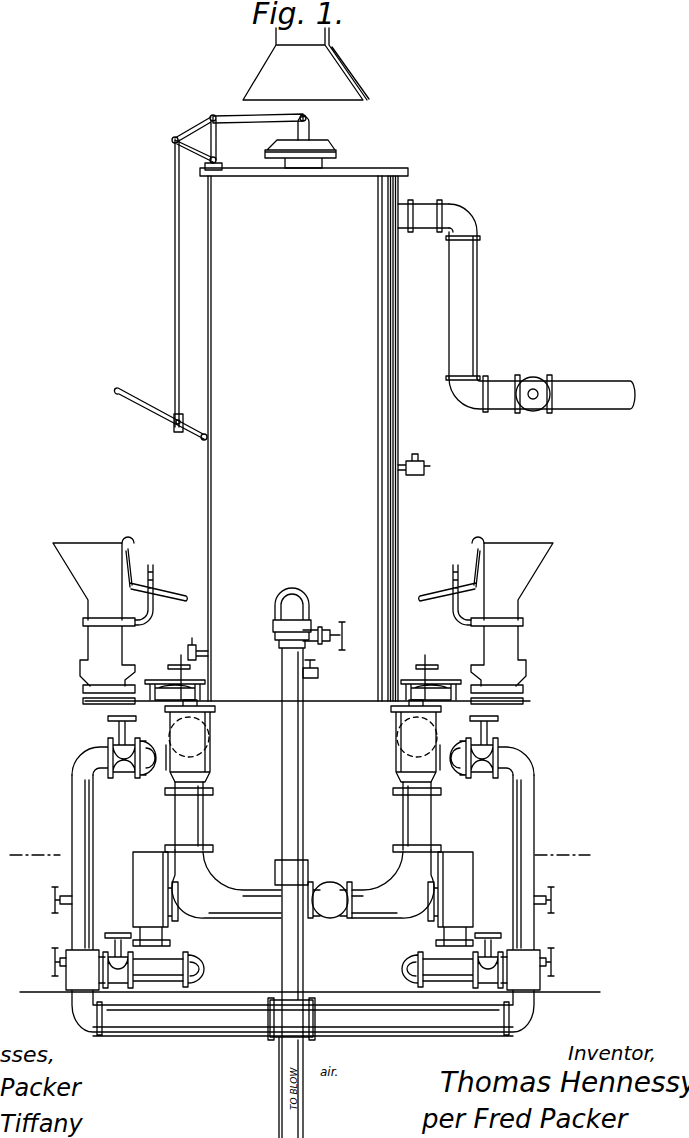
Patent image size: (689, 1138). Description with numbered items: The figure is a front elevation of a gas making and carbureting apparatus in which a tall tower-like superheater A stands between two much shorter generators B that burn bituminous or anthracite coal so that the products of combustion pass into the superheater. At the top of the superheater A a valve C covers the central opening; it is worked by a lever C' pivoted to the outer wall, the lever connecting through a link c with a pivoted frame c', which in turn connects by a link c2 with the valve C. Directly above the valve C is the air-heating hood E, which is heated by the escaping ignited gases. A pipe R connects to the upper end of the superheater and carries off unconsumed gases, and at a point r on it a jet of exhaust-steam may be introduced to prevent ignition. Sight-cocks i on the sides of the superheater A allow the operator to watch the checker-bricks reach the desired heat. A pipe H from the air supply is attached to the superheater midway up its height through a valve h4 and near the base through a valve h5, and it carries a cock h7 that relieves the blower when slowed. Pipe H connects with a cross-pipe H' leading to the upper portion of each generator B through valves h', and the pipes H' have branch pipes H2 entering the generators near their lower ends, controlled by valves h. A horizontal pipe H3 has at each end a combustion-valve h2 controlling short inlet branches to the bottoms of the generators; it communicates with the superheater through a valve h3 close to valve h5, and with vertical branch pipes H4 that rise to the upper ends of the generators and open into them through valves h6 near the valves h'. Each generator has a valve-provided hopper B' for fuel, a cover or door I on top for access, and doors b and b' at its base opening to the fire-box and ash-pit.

The air-heating hood E is at (306, 64).
The superheater A is at (307, 434).
The valve C is at (310, 143).
The link c2 is at (266, 120).
The pivoted frame c' is at (197, 140).
The link c is at (167, 283).
The lever C' is at (160, 416).
The point r is at (424, 212).
The pipe R is at (470, 323).
The sight-cock i is at (313, 557).
The valve-provided hopper B' is at (303, 620).
The cover or door I is at (178, 690).
The valve h6 is at (193, 722).
The valve h' is at (299, 753).
The cross-pipe H' is at (305, 920).
The generator B is at (300, 818).
The vertical branch pipe H4 is at (205, 806).
The horizontal pipe H3 is at (243, 890).
The combustion-valve h2 is at (143, 862).
The pipe H is at (317, 863).
The valve h4 is at (326, 648).
The cock h7 is at (312, 680).
The valve h5 is at (308, 866).
The valve h3 is at (348, 888).
The door b is at (294, 901).
The door b' is at (301, 960).
The valve h is at (303, 948).
The branch pipe H2 is at (190, 962).